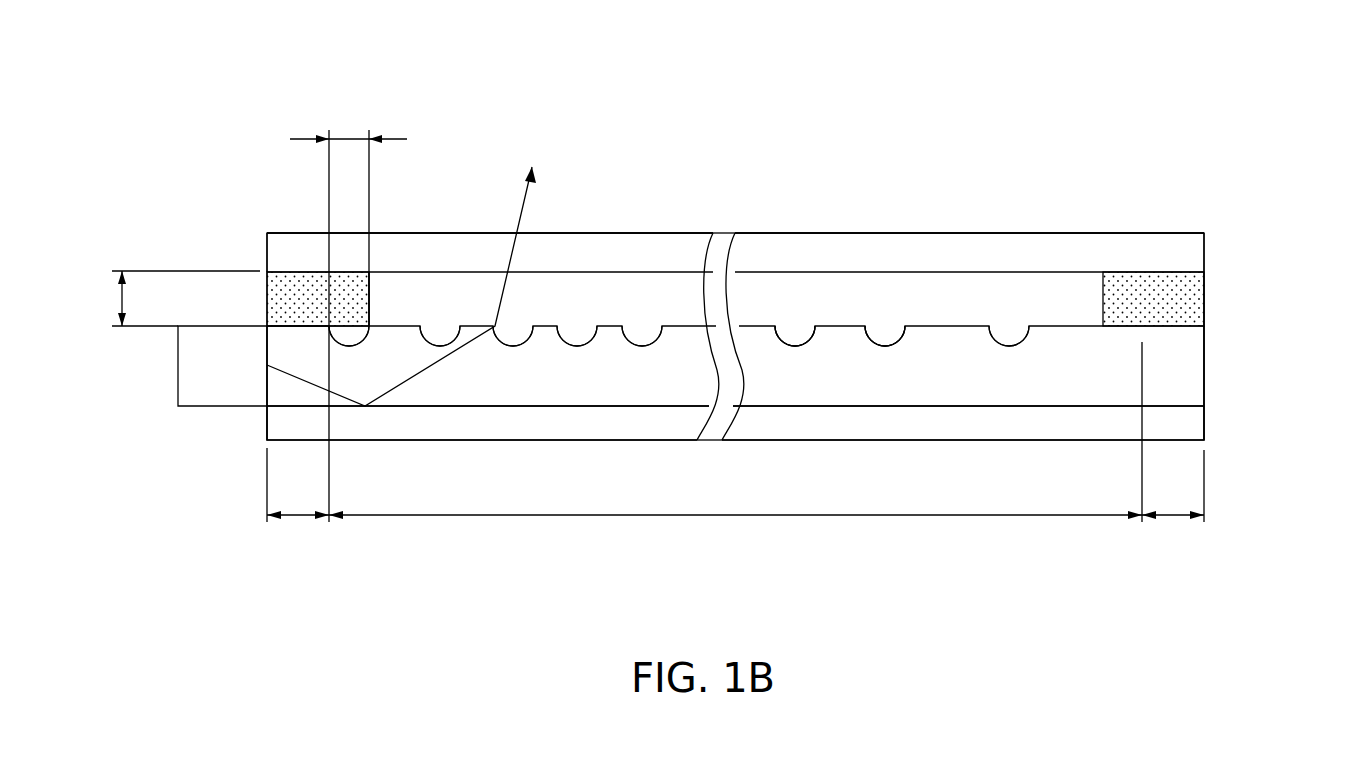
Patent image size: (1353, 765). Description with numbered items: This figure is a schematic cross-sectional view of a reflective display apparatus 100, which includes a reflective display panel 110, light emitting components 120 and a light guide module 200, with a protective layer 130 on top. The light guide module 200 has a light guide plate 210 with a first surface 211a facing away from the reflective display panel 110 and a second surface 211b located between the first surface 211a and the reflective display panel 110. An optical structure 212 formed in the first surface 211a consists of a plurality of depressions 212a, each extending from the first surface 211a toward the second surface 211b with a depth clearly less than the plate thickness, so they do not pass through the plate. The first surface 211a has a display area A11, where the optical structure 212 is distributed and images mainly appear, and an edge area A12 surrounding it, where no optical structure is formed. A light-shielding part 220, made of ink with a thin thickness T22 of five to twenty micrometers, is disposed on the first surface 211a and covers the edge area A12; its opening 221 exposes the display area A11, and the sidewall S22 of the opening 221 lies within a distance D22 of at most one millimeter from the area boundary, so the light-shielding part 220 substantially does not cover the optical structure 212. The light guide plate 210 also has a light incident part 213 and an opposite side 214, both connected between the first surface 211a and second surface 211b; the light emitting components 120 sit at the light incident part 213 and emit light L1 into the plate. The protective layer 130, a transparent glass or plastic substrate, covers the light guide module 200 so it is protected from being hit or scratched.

The reflective display apparatus 100 is at (107, 78).
The reflective display panel 110 is at (283, 423).
The light emitting components 120 is at (192, 365).
The protective layer 130 is at (283, 252).
The light guide module 200 is at (1018, 148).
The light guide plate 210 is at (1042, 365).
The first surface 211a is at (948, 314).
The second surface 211b is at (848, 418).
The optical structure 212 is at (755, 148).
The depressions 212a is at (887, 345).
The light incident part 213 is at (253, 383).
The opposite side 214 is at (1218, 373).
The light-shielding part 220 is at (1147, 290).
The opening 221 is at (479, 245).
The sidewall S22 is at (382, 292).
The distance D22 is at (348, 310).
The thickness T22 is at (160, 298).
The light L1 is at (525, 203).
The display area A11 is at (735, 533).
The edge area A12 is at (735, 448).